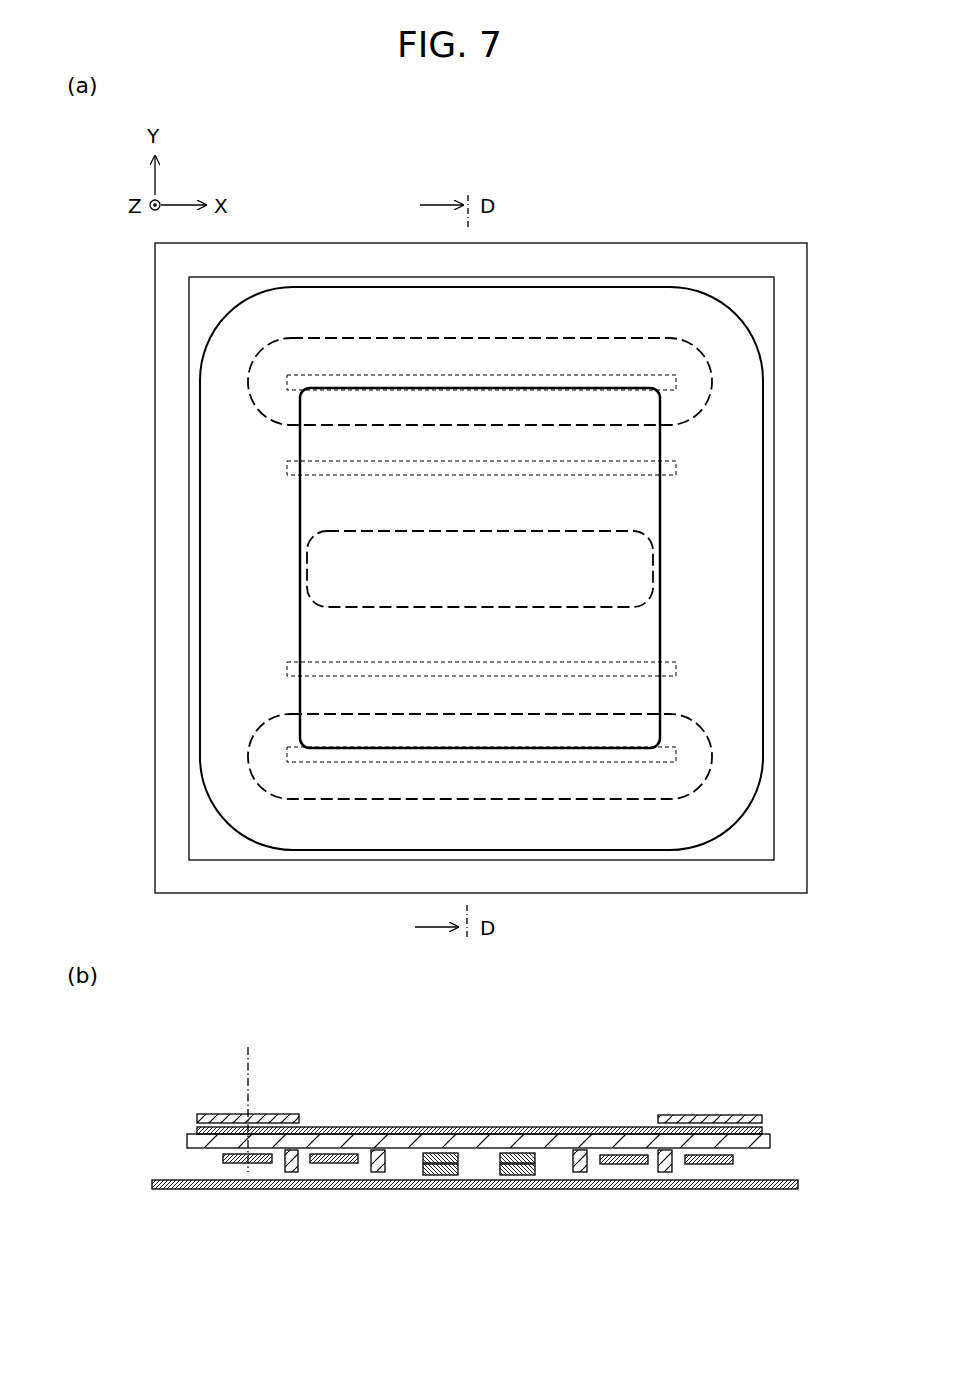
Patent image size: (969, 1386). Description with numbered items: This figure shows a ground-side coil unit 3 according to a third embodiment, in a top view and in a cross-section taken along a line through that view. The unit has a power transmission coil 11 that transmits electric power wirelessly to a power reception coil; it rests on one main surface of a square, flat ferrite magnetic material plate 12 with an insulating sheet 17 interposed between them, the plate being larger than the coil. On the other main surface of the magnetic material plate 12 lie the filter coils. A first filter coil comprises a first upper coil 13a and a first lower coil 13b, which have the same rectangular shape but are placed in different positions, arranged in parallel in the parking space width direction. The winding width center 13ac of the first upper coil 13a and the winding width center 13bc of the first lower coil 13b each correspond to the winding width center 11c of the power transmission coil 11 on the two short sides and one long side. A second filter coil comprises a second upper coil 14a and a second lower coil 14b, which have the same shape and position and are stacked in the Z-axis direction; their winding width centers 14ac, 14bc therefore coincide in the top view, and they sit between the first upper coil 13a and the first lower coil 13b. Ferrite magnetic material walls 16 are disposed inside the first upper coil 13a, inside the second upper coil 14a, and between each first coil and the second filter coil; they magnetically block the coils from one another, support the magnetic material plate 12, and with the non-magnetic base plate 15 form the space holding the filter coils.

The ground-side coil unit 3 is at (716, 238).
The power transmission coil 11 is at (750, 723).
The winding width center 11c is at (248, 1058).
The magnetic material plate 12 is at (765, 783).
The first upper coil 13a is at (223, 1158).
The winding width center 13ac is at (438, 338).
The first lower coil 13b is at (623, 1164).
The winding width center 13bc is at (438, 799).
The second upper coil 14a is at (438, 1153).
The second lower coil 14b is at (442, 1175).
The winding width center 14ac is at (480, 593).
The winding width center 14bc is at (453, 607).
The base plate 15 is at (800, 835).
The magnetic material wall 16 is at (453, 385).
The insulating sheet 17 is at (537, 1127).